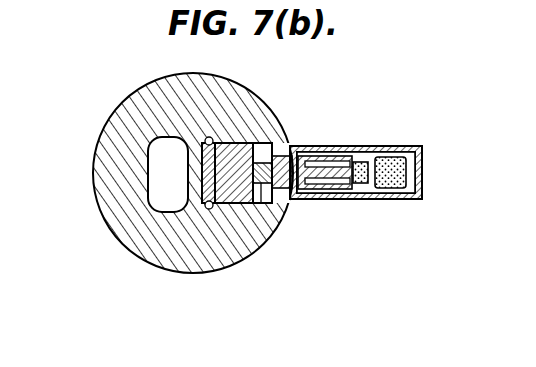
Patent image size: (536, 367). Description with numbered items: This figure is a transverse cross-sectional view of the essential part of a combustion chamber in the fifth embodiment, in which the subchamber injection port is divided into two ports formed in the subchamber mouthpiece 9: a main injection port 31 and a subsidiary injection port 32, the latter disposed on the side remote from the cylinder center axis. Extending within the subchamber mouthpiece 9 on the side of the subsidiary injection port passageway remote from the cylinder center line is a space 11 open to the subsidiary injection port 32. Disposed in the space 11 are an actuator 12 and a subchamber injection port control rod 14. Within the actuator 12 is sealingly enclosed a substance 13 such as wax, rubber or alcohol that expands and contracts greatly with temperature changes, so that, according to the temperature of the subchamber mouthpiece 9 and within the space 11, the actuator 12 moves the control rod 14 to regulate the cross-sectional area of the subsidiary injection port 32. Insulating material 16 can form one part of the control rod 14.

The subchamber mouthpiece 9 is at (262, 120).
The main injection port 31 is at (175, 204).
The subsidiary injection port 32 is at (218, 204).
The subchamber injection port control rod 14 is at (243, 195).
The insulating material 16 is at (263, 189).
The actuator 12 is at (320, 199).
The space 11 is at (358, 191).
The substance 13 is at (393, 191).